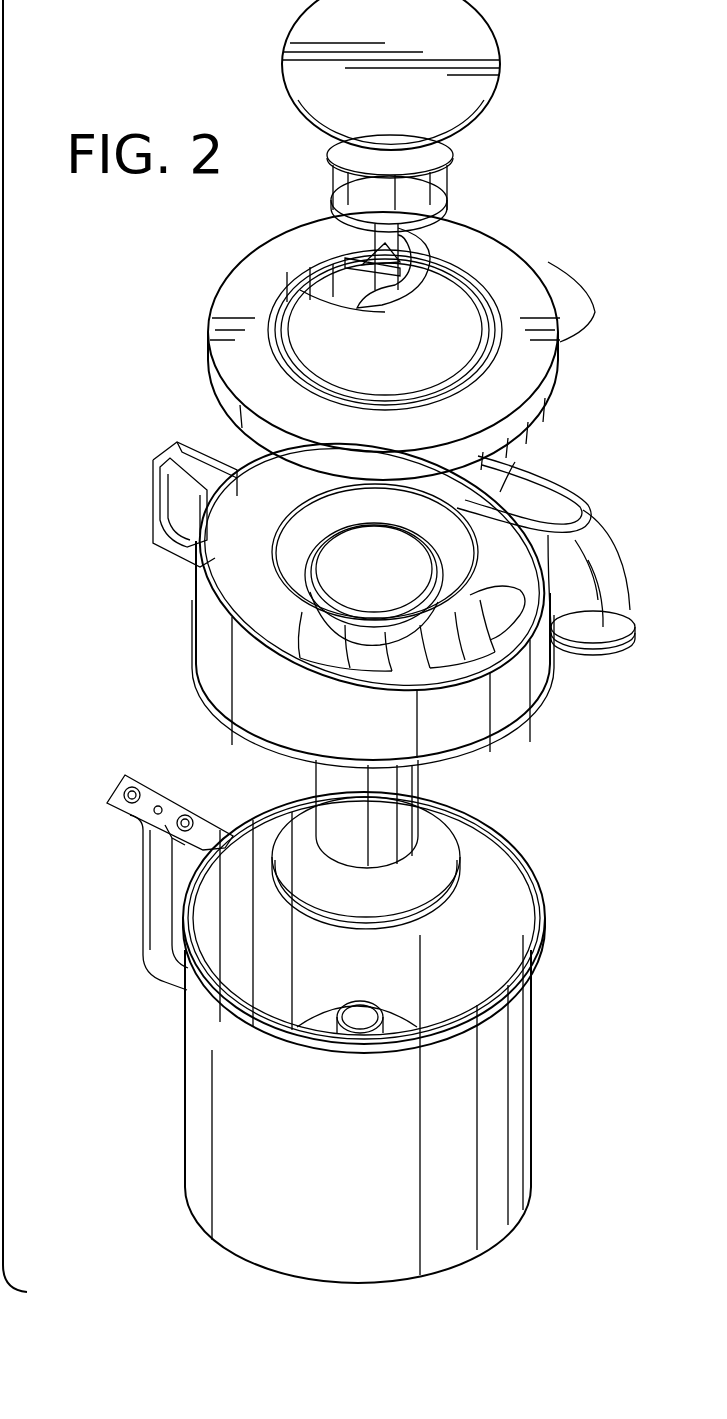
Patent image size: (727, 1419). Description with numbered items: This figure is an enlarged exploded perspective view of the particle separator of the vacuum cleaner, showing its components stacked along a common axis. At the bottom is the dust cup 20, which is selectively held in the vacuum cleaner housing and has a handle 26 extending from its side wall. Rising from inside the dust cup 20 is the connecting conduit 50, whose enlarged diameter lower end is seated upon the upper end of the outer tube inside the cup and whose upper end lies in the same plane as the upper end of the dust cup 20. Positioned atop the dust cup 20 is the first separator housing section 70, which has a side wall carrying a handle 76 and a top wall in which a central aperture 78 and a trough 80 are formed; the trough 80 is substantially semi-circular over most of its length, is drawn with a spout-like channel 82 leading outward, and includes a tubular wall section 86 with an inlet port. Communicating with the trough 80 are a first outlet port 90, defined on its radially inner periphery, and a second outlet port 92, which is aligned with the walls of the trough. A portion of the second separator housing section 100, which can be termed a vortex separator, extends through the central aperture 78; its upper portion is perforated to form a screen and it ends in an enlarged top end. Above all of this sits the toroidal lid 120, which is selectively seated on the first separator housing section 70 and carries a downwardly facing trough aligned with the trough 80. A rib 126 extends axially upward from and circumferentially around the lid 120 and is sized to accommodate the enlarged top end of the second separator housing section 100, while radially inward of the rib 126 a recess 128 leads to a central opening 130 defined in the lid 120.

The second separator housing section 100 is at (448, 180).
The toroidal lid 120 is at (414, 346).
The rib 126 is at (480, 275).
The recess 128 is at (318, 378).
The central opening 130 is at (325, 310).
The first separator housing section 70 is at (381, 586).
The handle 76 is at (160, 487).
The central aperture 78 is at (325, 572).
The trough 80 is at (238, 585).
The spout trough 82 is at (548, 512).
The tubular wall section 86 is at (605, 590).
The first outlet port 90 is at (340, 630).
The second outlet port 92 is at (483, 620).
The connecting conduit 50 is at (402, 812).
The dust cup 20 is at (347, 1029).
The handle 26 is at (147, 875).